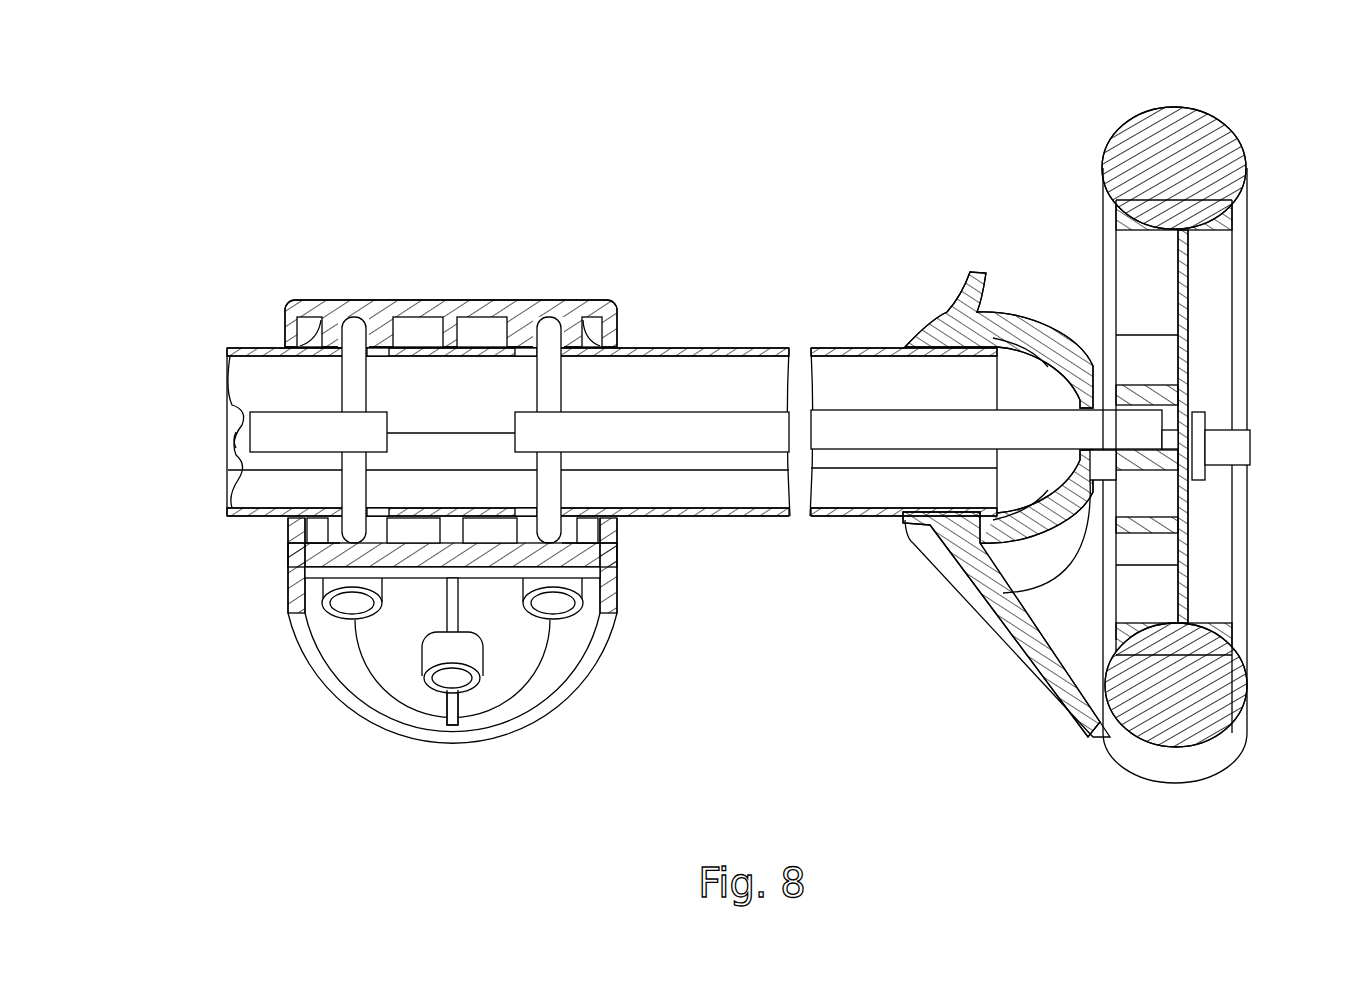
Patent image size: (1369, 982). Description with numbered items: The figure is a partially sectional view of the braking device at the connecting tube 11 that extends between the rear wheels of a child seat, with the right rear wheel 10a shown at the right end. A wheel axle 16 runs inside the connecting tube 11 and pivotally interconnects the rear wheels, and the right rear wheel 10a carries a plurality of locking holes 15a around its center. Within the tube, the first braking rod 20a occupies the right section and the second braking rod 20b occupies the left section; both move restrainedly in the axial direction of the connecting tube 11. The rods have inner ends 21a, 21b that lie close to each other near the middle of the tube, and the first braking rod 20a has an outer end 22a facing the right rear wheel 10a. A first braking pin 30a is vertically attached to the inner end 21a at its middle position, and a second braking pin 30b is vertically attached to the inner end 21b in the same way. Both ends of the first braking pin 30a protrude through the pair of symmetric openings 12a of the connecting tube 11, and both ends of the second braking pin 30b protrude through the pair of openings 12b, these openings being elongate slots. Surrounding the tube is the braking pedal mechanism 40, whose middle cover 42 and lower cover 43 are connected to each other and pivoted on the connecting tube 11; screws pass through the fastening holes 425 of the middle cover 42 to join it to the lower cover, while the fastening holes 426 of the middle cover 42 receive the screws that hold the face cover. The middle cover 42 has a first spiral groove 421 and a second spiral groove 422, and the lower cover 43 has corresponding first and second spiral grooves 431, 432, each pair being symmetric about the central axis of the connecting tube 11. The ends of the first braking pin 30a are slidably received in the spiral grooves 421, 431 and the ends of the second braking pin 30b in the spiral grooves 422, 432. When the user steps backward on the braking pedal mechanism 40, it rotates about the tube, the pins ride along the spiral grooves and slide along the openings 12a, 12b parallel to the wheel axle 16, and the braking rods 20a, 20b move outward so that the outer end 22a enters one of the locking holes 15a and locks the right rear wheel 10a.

The braking pedal mechanism 40 is at (205, 160).
The right rear wheel 10a is at (1220, 130).
The connecting tube 11 is at (771, 347).
The openings 12a is at (520, 345).
The openings 12b is at (381, 345).
The locking holes 15a is at (1177, 418).
The wheel axle 16 is at (1252, 448).
The first braking rod 20a is at (840, 425).
The second braking rod 20b is at (273, 427).
The inner end of the first braking rod 21a is at (525, 424).
The inner end of the second braking rod 21b is at (380, 420).
The outer end of the first braking rod 22a is at (1093, 415).
The first braking pin 30a is at (548, 340).
The second braking pin 30b is at (353, 340).
The middle cover 42 is at (580, 704).
The first spiral groove 421 is at (580, 540).
The second spiral groove 422 is at (317, 547).
The fastening holes 425 is at (553, 598).
The fastening holes 426 is at (445, 683).
The lower cover 43 is at (621, 314).
The first spiral groove 431 is at (573, 347).
The second spiral groove 432 is at (338, 350).